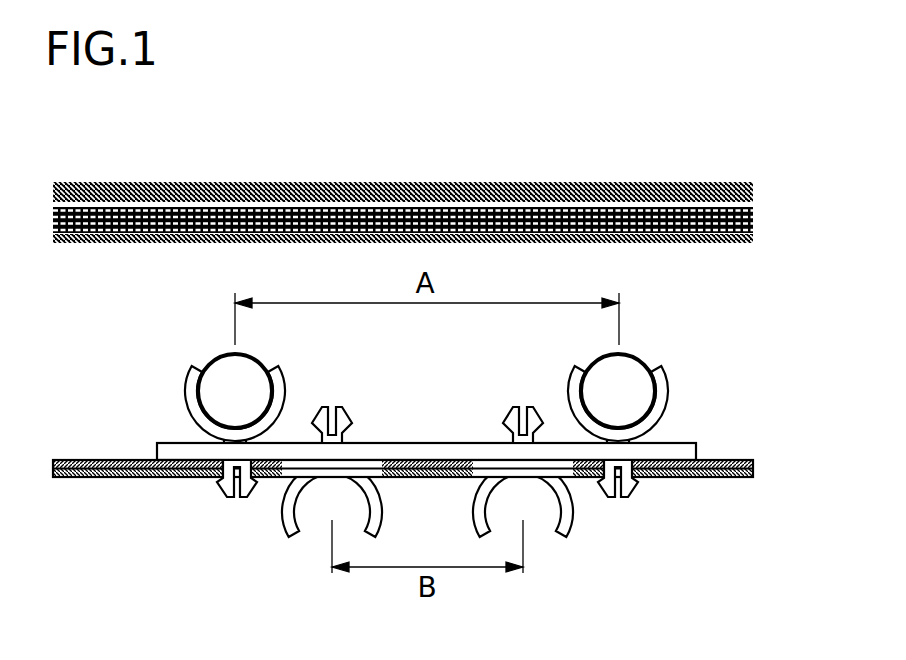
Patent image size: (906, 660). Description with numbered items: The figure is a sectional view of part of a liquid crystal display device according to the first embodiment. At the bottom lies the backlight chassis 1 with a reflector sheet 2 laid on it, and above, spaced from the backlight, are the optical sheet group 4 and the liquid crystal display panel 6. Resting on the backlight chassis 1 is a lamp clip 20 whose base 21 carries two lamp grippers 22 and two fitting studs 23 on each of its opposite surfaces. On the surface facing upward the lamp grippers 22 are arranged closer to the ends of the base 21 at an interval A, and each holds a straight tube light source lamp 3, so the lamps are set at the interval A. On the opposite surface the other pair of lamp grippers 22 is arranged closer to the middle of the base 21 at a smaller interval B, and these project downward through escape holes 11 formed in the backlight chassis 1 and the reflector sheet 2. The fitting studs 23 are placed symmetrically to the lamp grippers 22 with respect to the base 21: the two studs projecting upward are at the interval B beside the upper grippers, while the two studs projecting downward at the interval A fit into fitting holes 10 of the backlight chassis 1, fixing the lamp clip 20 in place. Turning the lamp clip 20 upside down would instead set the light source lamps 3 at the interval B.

The backlight chassis 1 is at (403, 479).
The reflector sheet 2 is at (79, 458).
The light source lamp 3 is at (638, 355).
The optical sheet group 4 is at (697, 243).
The liquid crystal display panel 6 is at (431, 214).
The fitting hole 10 is at (403, 479).
The escape hole 11 is at (283, 477).
The lamp clip 20 is at (433, 450).
The base 21 is at (425, 443).
The lamp gripper 22 is at (668, 392).
The fitting stud 23 is at (616, 498).